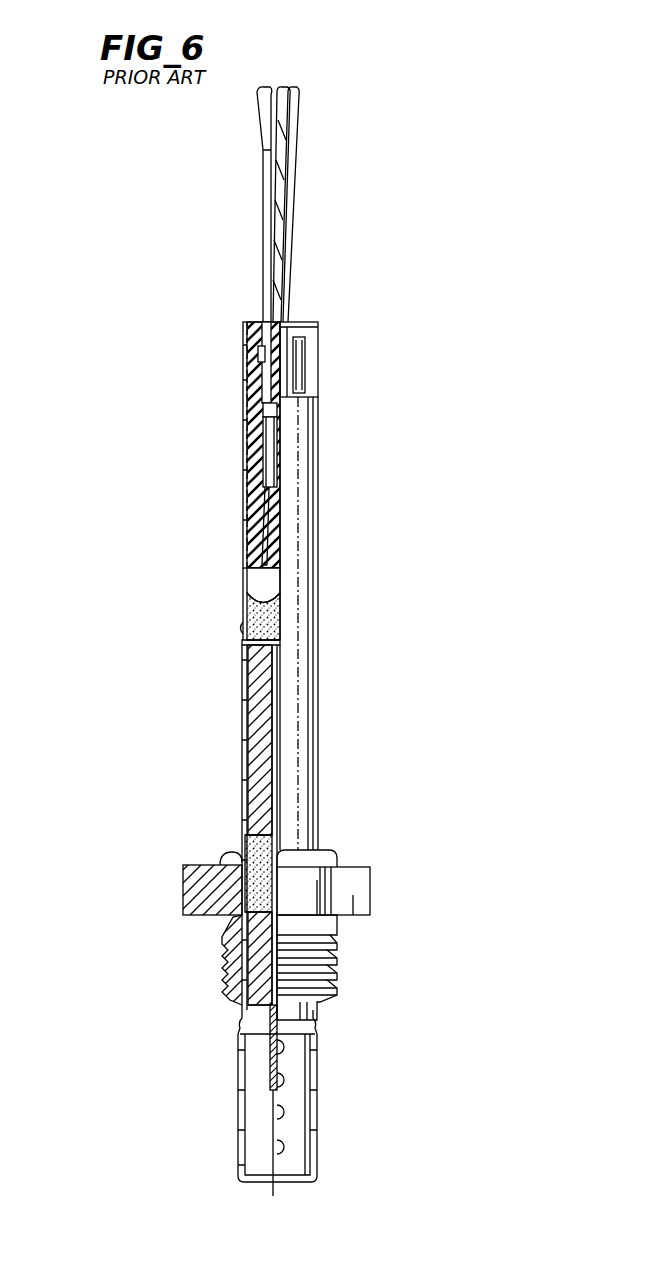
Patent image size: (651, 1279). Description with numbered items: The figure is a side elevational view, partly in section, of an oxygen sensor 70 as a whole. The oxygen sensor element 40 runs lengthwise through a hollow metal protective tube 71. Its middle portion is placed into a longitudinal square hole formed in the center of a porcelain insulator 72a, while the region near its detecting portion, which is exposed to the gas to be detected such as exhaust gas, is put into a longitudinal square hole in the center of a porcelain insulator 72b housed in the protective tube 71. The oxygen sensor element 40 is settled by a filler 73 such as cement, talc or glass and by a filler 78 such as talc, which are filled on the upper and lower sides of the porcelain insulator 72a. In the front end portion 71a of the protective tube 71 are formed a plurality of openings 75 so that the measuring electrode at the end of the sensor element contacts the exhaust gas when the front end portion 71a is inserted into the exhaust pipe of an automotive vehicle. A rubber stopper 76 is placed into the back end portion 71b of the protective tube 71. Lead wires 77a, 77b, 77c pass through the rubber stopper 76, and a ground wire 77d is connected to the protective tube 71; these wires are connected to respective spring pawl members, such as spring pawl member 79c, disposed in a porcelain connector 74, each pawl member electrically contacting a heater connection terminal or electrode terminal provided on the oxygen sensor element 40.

The oxygen sensor 70 is at (361, 77).
The protective tube 71 is at (243, 668).
The front end portion 71a is at (240, 1152).
The back end portion 71b is at (318, 328).
The porcelain insulator 72a is at (255, 757).
The porcelain insulator 72b is at (250, 1005).
The filler 73 is at (250, 600).
The porcelain connector 74 is at (252, 467).
The openings 75 is at (285, 1112).
The rubber stopper 76 is at (255, 322).
The lead wire 77a is at (292, 120).
The lead wire 77b is at (298, 270).
The lead wire 77c is at (263, 199).
The ground wire 77d is at (259, 356).
The filler 78 is at (250, 890).
The spring pawl member 79c is at (265, 548).
The oxygen sensor element 40 is at (280, 707).